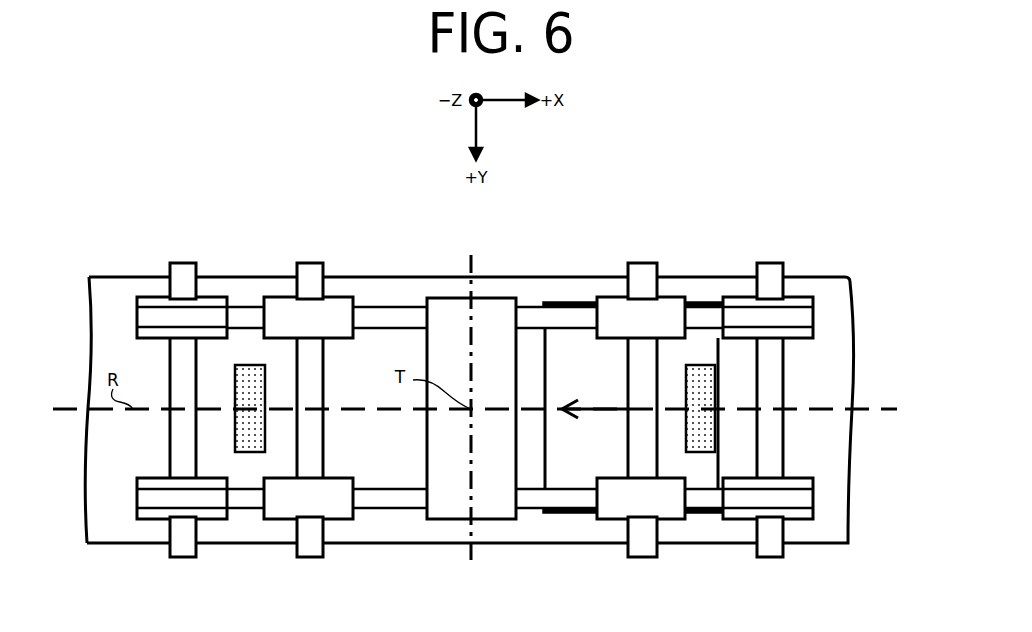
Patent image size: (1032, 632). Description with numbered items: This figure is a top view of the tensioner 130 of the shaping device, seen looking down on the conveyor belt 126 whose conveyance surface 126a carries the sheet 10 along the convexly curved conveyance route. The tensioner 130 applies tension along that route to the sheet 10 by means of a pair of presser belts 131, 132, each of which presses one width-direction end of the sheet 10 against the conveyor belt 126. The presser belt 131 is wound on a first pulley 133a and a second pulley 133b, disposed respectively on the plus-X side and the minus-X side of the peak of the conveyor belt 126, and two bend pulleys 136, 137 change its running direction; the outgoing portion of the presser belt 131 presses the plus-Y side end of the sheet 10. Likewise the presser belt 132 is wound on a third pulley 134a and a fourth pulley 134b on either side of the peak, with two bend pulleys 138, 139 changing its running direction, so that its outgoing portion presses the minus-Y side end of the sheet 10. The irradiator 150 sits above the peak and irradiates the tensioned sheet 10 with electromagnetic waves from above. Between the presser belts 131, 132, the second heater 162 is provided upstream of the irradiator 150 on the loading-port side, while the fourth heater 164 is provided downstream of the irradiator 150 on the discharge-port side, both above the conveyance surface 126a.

The sheet 10 is at (566, 303).
The conveyor belt 126 is at (153, 275).
The conveyance surface 126a is at (103, 287).
The tensioner 130 is at (784, 243).
The presser belt 131 is at (392, 520).
The presser belt 132 is at (525, 303).
The first pulley 133a is at (813, 514).
The second pulley 133b is at (137, 514).
The third pulley 134a is at (813, 300).
The fourth pulley 134b is at (137, 300).
The bend pulley 136 is at (610, 520).
The bend pulley 137 is at (338, 520).
The bend pulley 138 is at (612, 297).
The bend pulley 139 is at (330, 297).
The irradiator 150 is at (497, 520).
The second heater 162 is at (703, 365).
The fourth heater 164 is at (247, 365).